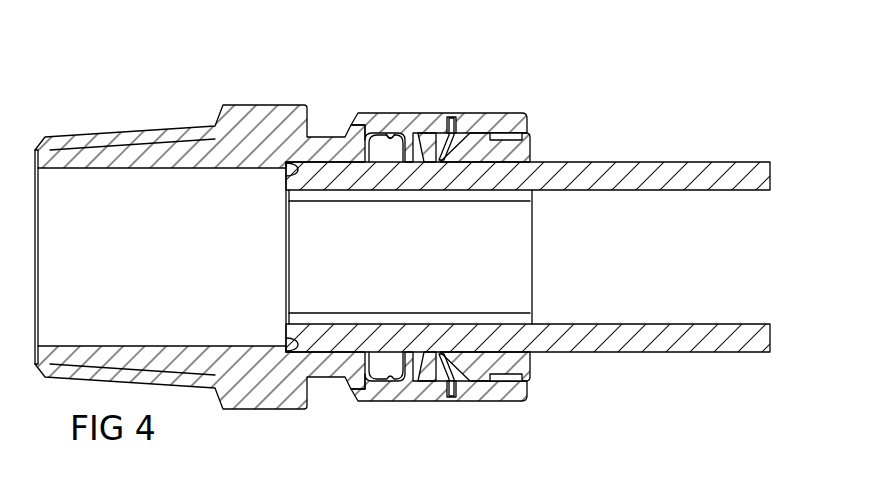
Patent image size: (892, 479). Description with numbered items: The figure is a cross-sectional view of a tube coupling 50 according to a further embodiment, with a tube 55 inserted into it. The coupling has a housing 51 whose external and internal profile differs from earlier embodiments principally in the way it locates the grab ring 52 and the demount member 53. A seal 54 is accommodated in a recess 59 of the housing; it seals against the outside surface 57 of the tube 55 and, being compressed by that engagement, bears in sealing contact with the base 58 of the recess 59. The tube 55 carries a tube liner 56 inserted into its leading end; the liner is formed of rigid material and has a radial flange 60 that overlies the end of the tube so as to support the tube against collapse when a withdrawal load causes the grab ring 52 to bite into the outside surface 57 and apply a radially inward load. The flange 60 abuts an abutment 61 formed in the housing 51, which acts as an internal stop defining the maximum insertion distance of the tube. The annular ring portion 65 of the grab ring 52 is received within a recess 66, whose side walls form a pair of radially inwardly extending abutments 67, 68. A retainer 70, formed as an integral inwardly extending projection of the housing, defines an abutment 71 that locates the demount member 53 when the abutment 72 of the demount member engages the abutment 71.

The tube coupling 50 is at (665, 62).
The housing 51 is at (110, 130).
The grab ring 52 is at (424, 382).
The demount member 53 is at (530, 150).
The seal 54 is at (376, 150).
The tube 55 is at (741, 162).
The tube liner 56 is at (347, 320).
The outside surface 57 is at (656, 162).
The base 58 is at (392, 142).
The recess 59 is at (381, 382).
The radial flange 60 is at (288, 333).
The abutment 61 is at (293, 171).
The annular ring portion 65 is at (456, 382).
The recess 66 is at (446, 380).
The abutment 67 is at (440, 122).
The abutment 68 is at (457, 135).
The retainer 70 is at (510, 388).
The abutment 71 is at (522, 384).
The abutment 72 is at (502, 137).